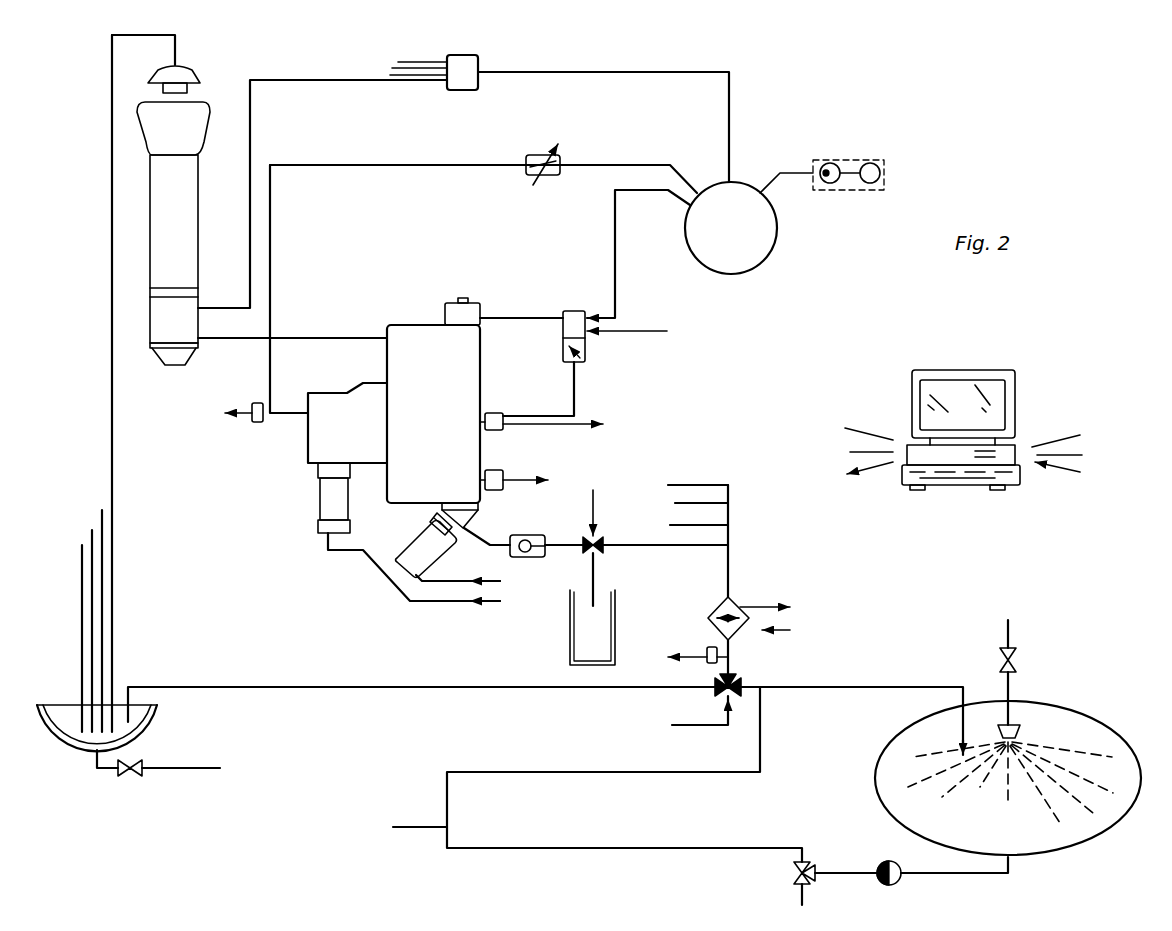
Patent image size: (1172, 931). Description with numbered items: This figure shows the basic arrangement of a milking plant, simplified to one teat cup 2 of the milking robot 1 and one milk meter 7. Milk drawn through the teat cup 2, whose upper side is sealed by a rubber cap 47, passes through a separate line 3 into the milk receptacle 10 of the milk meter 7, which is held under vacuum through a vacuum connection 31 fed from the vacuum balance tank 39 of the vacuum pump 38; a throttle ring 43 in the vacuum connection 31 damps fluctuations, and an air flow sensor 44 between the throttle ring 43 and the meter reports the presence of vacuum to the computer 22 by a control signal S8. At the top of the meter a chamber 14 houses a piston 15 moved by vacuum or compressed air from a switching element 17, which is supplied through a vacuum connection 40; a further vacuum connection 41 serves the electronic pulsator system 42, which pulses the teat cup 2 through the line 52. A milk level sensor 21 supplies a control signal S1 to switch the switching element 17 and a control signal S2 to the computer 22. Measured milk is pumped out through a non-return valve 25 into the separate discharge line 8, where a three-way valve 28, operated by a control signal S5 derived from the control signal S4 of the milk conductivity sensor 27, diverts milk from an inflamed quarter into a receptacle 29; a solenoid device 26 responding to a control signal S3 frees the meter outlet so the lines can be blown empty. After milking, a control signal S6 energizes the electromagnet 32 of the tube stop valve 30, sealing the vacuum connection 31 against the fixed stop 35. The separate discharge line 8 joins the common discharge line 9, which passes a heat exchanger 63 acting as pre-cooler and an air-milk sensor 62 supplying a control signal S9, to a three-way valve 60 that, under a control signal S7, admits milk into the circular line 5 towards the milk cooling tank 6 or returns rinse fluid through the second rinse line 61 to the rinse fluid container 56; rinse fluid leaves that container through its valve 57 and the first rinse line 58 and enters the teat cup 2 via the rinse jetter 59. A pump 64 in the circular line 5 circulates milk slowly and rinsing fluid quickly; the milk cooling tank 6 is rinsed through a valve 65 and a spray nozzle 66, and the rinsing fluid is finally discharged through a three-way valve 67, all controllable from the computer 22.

The milking robot 1 is at (467, 351).
The teat cup 2 is at (177, 200).
The separate line 3 is at (330, 337).
The circular line 5 is at (630, 775).
The milk cooling tank 6 is at (888, 750).
The milk meter 7 is at (406, 506).
The separate discharge line 8 is at (692, 485).
The common discharge line 9 is at (730, 572).
The milk receptacle 10 is at (392, 448).
The chamber 14 is at (445, 303).
The piston 15 is at (178, 232).
The switching element 17 is at (588, 290).
The milk level sensor 21 is at (518, 400).
The computer 22 is at (988, 344).
The non-return valve 25 is at (545, 532).
The solenoid device 26 is at (425, 550).
The milk conductivity sensor 27 is at (518, 458).
The three-way valve 28 is at (600, 555).
The receptacle 29 is at (575, 637).
The tube stop valve 30 is at (325, 438).
The vacuum connection 31 is at (270, 262).
The electromagnet 32 is at (327, 500).
The fixed stop 35 is at (336, 393).
The vacuum pump 38 is at (858, 150).
The vacuum balance tank 39 is at (767, 240).
The vacuum connection 40 is at (615, 260).
The vacuum connection 41 is at (692, 74).
The electronic pulsator system 42 is at (467, 90).
The throttle ring 43 is at (535, 150).
The air flow sensor 44 is at (258, 424).
The rubber cap 47 is at (200, 125).
The line 52 is at (405, 62).
The rinse fluid container 56 is at (155, 722).
The valve 57 is at (127, 778).
The first rinse line 58 is at (95, 568).
The rinse jetter 59 is at (180, 70).
The three-way valve 60 is at (745, 690).
The second rinse line 61 is at (322, 680).
The air-milk sensor 62 is at (707, 647).
The heat exchanger 63 is at (740, 640).
The pump 64 is at (889, 861).
The valve 65 is at (1015, 665).
The spray nozzle 66 is at (1020, 727).
The three-way valve 67 is at (795, 867).
The control signal S1 is at (574, 388).
The control signal S2 is at (571, 430).
The control signal S3 is at (472, 586).
The control signal S4 is at (538, 483).
The control signal S5 is at (593, 490).
The control signal S6 is at (428, 575).
The control signal S7 is at (635, 726).
The control signal S8 is at (212, 416).
The control signal S9 is at (663, 665).